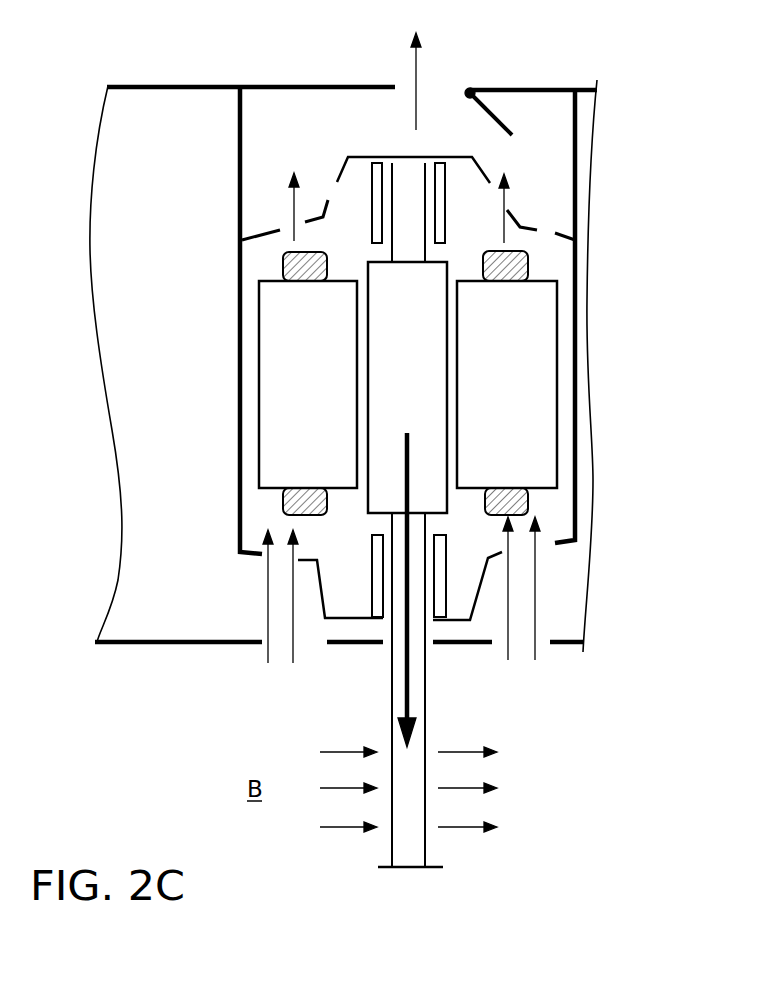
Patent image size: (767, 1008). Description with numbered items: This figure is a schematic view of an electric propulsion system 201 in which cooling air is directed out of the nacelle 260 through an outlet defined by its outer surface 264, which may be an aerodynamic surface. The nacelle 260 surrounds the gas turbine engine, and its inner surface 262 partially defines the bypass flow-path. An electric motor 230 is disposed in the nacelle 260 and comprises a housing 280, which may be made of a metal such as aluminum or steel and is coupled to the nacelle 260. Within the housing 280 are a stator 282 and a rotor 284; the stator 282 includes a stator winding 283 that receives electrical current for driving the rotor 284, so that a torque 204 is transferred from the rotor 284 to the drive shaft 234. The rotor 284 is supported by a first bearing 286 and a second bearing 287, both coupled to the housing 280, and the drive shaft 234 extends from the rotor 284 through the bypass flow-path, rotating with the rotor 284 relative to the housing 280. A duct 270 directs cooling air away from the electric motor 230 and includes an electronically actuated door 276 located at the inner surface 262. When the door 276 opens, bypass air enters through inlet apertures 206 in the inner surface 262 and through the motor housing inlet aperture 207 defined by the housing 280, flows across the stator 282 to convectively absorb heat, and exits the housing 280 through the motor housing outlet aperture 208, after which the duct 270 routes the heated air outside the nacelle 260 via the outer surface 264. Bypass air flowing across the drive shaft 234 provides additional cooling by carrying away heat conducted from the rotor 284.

The electric propulsion system 201 is at (656, 145).
The torque 204 is at (407, 450).
The inlet apertures 206 is at (305, 663).
The motor housing inlet aperture 207 is at (255, 565).
The motor housing outlet aperture 208 is at (318, 182).
The electric motor 230 is at (558, 255).
The drive shaft 234 is at (427, 680).
The nacelle 260 is at (168, 100).
The inner surface 262 is at (178, 645).
The outer surface 264 is at (226, 80).
The duct 270 is at (240, 181).
The electronically actuated door 276 is at (512, 135).
The housing 280 is at (240, 367).
The stator 282 is at (524, 383).
The stator winding 283 is at (528, 495).
The rotor 284 is at (420, 383).
The first bearing 286 is at (375, 168).
The second bearing 287 is at (373, 572).